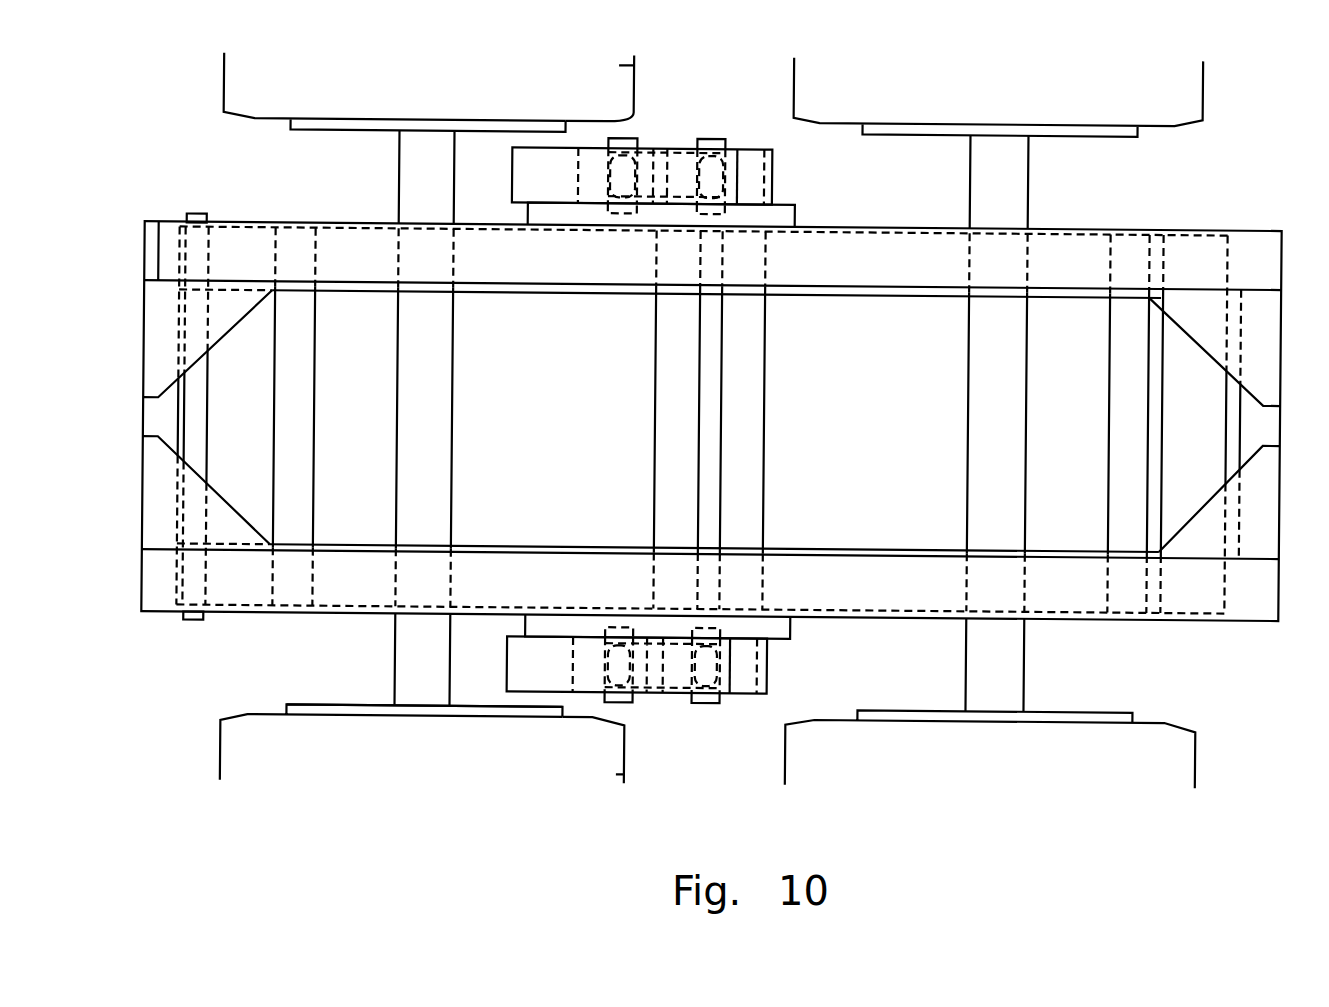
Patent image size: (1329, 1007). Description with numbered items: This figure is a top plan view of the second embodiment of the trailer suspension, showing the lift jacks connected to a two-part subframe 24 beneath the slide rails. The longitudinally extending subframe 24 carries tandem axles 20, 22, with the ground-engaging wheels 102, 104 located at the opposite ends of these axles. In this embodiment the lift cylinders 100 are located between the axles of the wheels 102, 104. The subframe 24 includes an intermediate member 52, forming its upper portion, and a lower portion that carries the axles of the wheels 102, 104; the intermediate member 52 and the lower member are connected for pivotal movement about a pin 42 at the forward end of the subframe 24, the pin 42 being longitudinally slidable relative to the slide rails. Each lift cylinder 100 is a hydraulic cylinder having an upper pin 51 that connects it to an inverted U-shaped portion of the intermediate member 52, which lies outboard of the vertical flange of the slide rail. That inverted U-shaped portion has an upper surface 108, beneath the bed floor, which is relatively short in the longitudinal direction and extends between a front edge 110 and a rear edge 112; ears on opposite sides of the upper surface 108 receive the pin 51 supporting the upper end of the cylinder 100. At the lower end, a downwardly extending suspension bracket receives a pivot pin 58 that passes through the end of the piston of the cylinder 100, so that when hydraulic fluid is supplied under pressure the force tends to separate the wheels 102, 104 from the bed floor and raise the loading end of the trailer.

The axle 20 is at (430, 442).
The axle 22 is at (1005, 427).
The subframe 24 is at (839, 564).
The pin 42 is at (194, 626).
The upper pin 51 is at (624, 138).
The intermediate member 52 is at (539, 693).
The pivot pin 58 is at (705, 137).
The lift cylinder 100 is at (682, 160).
The wheels 102 is at (630, 65).
The wheels 104 is at (1185, 89).
The upper surface 108 is at (545, 158).
The front edge 110 is at (505, 195).
The rear edge 112 is at (768, 167).